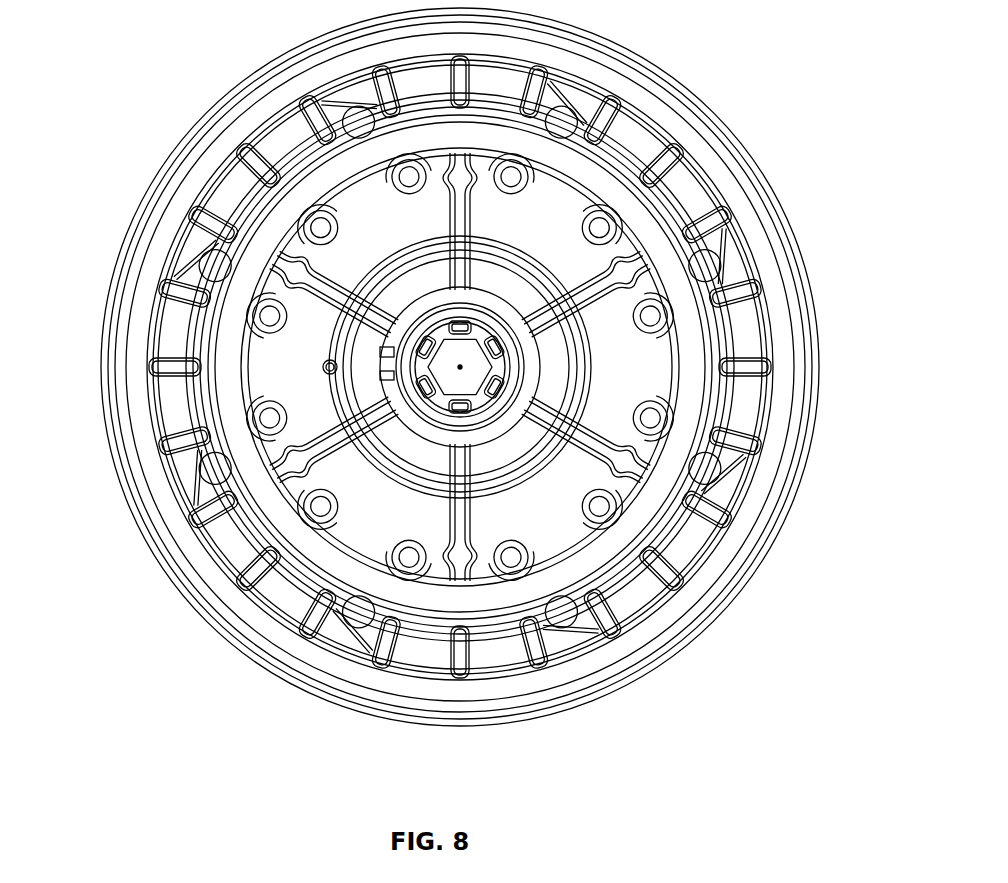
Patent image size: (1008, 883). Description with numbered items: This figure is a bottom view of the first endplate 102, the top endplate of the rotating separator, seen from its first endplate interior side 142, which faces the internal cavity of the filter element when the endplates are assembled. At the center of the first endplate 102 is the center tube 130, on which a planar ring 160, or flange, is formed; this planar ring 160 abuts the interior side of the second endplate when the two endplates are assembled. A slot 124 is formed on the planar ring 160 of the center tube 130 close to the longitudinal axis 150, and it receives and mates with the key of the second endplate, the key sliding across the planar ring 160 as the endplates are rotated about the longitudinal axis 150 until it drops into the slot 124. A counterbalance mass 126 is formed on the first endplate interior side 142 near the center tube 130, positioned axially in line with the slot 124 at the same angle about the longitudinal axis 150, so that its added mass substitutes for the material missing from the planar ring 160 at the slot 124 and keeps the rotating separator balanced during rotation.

The first endplate 102 is at (636, 49).
The first endplate interior side 142 is at (662, 633).
The longitudinal axis 150 is at (462, 365).
The planar ring 160 is at (533, 366).
The center tube 130 is at (483, 413).
The counterbalance mass 126 is at (323, 366).
The slot 124 is at (383, 371).